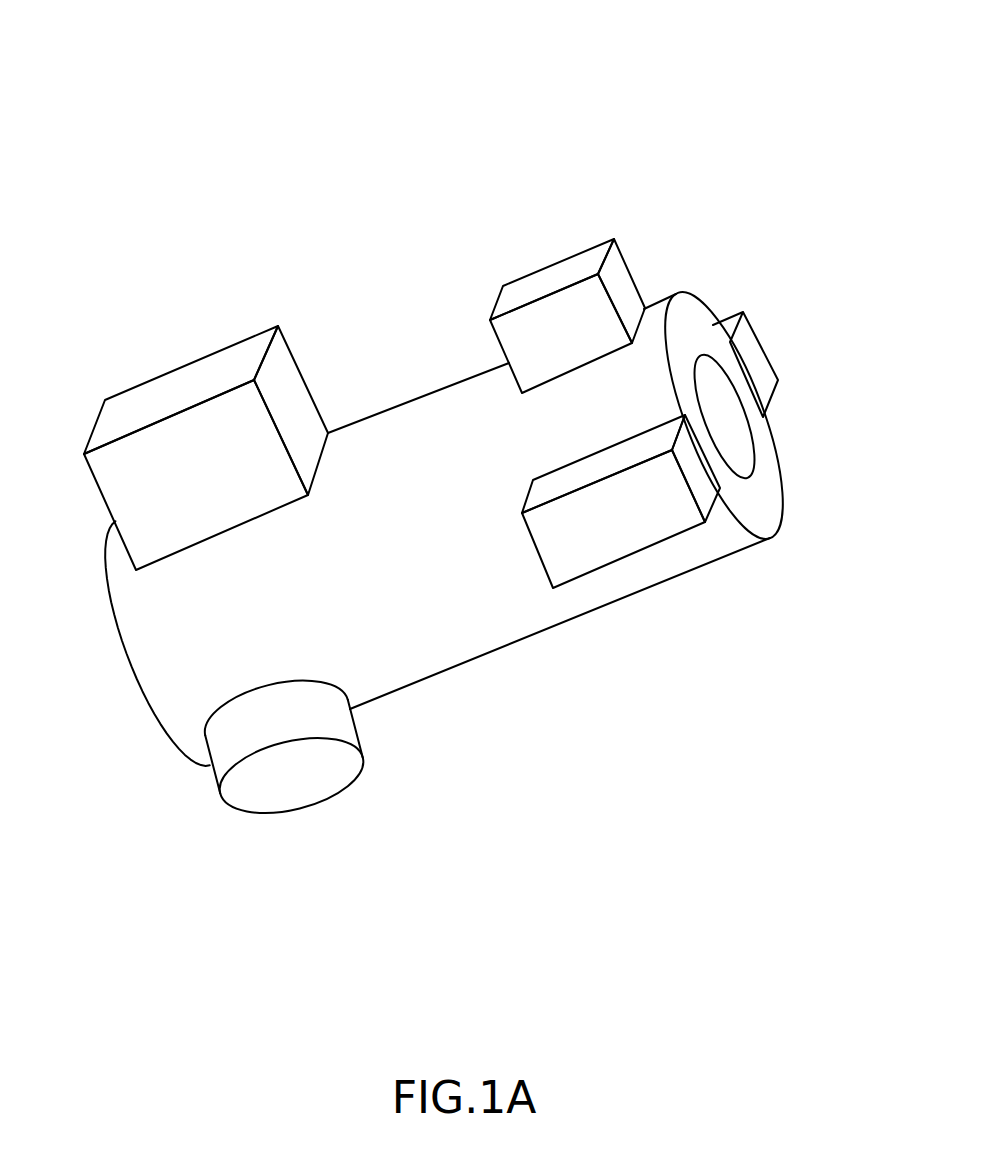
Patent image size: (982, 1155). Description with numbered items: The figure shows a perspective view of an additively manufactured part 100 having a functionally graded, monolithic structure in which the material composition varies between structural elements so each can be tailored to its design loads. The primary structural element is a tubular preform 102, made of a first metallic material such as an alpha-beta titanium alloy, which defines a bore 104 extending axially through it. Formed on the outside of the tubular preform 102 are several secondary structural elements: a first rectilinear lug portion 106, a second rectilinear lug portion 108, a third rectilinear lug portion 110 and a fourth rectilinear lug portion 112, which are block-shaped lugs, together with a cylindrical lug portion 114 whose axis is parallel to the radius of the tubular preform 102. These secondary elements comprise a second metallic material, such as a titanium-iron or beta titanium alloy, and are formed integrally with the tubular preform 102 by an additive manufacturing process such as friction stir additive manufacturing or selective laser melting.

The additively manufactured part 100 is at (618, 87).
The tubular preform 102 is at (453, 642).
The bore 104 is at (732, 428).
The first rectilinear lug portion 106 is at (615, 272).
The second rectilinear lug portion 108 is at (757, 352).
The third rectilinear lug portion 110 is at (665, 533).
The fourth rectilinear lug portion 112 is at (210, 357).
The cylindrical lug portion 114 is at (297, 795).